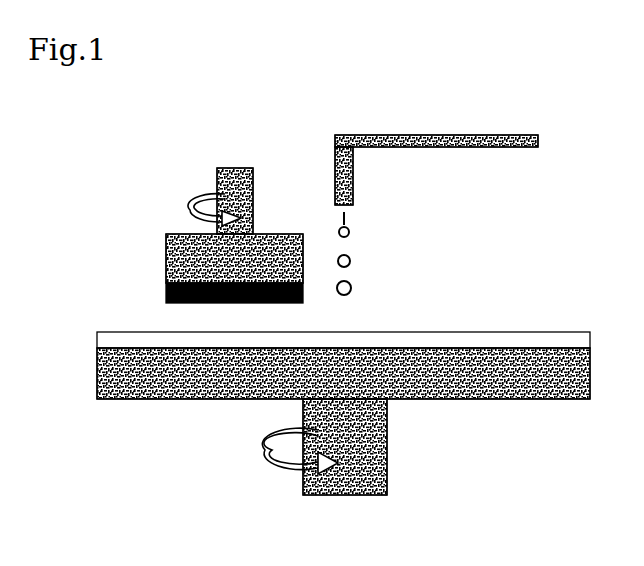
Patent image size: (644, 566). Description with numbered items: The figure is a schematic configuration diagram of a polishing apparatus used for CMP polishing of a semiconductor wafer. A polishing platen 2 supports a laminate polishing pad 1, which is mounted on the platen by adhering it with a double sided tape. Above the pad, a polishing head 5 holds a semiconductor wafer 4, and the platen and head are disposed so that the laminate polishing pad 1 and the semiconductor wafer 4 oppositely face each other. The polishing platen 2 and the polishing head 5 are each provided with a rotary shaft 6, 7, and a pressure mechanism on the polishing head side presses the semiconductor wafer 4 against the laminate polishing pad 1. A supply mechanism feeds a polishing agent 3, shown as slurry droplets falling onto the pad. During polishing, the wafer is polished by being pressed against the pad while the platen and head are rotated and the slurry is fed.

The laminate polishing pad 1 is at (343, 301).
The polishing platen 2 is at (343, 399).
The polishing agent 3 is at (456, 215).
The semiconductor wafer 4 is at (196, 290).
The polishing head 5 is at (184, 258).
The rotary shaft 6 is at (379, 447).
The rotary shaft 7 is at (190, 154).